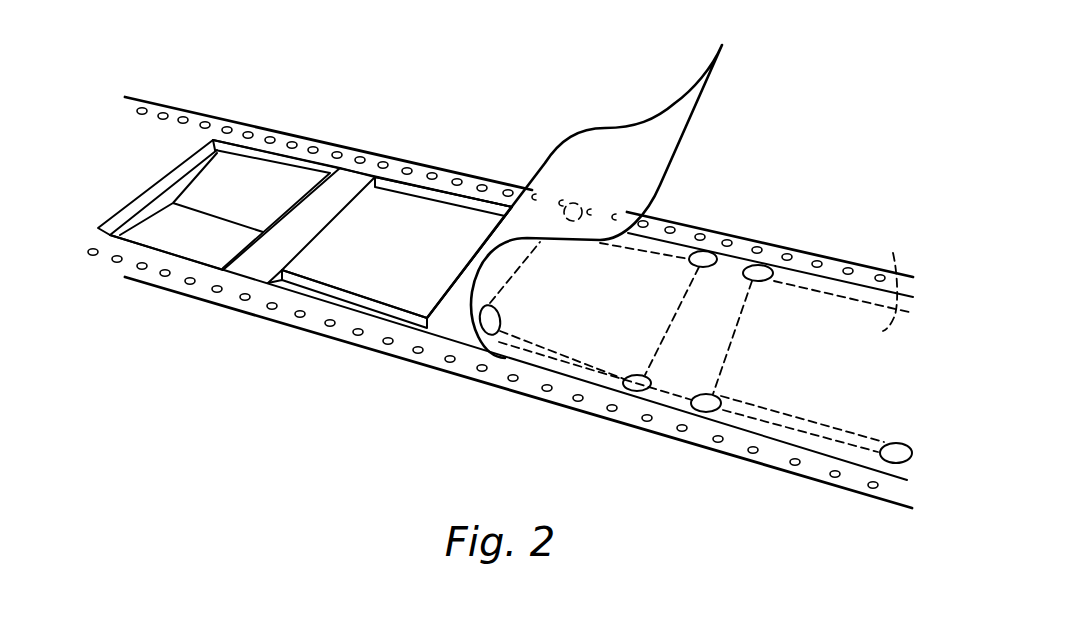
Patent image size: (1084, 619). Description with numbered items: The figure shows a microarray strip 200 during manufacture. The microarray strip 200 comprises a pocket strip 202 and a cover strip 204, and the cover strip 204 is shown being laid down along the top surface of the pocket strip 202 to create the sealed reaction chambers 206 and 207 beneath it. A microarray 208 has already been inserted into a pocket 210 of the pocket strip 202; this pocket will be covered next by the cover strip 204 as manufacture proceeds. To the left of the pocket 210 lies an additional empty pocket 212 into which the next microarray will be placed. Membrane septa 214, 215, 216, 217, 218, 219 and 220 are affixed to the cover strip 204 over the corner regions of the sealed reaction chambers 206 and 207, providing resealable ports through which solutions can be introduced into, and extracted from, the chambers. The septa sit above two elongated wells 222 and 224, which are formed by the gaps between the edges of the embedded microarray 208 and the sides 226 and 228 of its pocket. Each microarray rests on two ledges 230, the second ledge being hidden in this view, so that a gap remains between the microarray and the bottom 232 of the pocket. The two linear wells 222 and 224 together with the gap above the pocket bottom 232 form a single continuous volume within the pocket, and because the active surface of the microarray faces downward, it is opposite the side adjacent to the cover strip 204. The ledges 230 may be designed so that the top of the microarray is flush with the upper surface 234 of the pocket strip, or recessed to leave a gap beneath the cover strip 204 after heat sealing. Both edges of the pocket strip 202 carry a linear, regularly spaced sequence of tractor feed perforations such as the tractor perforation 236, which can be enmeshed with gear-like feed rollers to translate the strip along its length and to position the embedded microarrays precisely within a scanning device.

The microarray strip 200 is at (442, 66).
The pocket strip 202 is at (178, 297).
The cover strip 204 is at (708, 80).
The sealed reaction chamber 206 is at (662, 268).
The sealed reaction chamber 207 is at (894, 254).
The microarray 208 is at (460, 228).
The pocket 210 is at (380, 313).
The empty pocket 212 is at (257, 183).
The membrane septum 214 is at (899, 447).
The membrane septum 215 is at (768, 276).
The membrane septum 216 is at (712, 398).
The membrane septum 217 is at (637, 376).
The membrane septum 218 is at (705, 251).
The membrane septum 219 is at (497, 360).
The membrane septum 220 is at (578, 200).
The elongated well 222 is at (332, 298).
The elongated well 224 is at (400, 188).
The pocket side 226 is at (272, 311).
The pocket side 228 is at (462, 227).
The ledge 230 is at (145, 207).
The pocket bottom 232 is at (215, 213).
The upper surface of the pocket strip 234 is at (342, 193).
The tractor perforation 236 is at (791, 459).